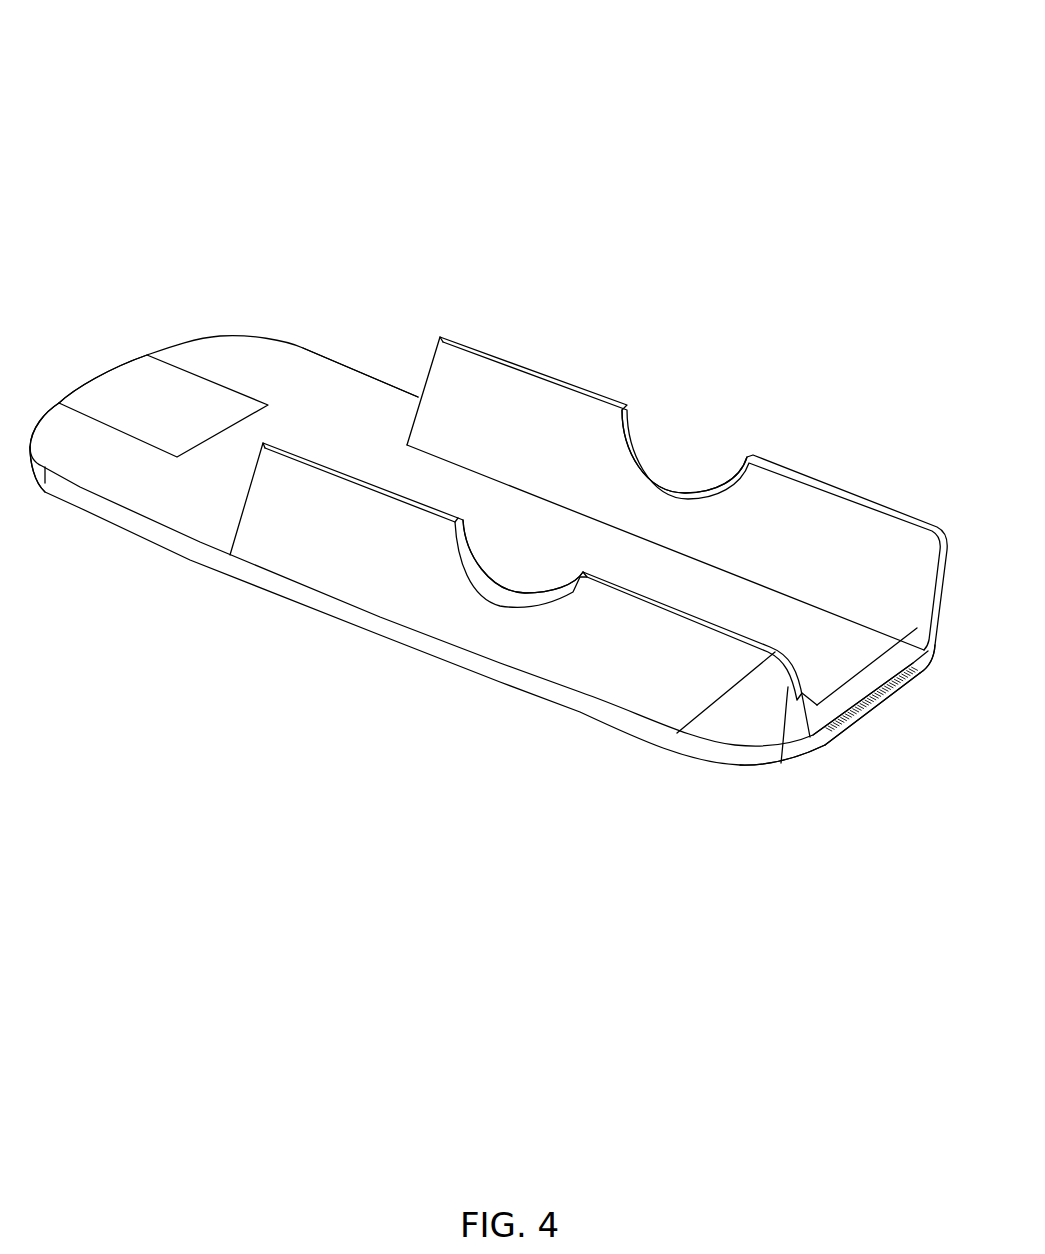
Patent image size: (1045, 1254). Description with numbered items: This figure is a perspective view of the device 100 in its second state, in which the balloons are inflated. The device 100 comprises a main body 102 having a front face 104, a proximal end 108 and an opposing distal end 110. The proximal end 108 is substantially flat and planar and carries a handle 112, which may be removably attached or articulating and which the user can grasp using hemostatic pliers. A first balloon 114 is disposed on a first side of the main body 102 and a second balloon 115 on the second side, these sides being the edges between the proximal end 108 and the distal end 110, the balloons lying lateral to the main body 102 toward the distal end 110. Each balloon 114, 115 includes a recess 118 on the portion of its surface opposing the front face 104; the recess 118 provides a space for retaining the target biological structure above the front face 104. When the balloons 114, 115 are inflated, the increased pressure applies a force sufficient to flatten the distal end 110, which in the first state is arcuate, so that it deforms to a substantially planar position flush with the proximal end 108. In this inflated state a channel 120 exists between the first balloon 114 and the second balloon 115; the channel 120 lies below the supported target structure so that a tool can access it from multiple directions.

The device 100 is at (136, 86).
The main body 102 is at (323, 358).
The front face 104 is at (354, 423).
The proximal end 108 is at (40, 420).
The distal end 110 is at (807, 757).
The handle 112 is at (150, 390).
The first balloon 114 is at (433, 610).
The second balloon 115 is at (585, 412).
The recess 118 is at (517, 593).
The channel 120 is at (887, 687).